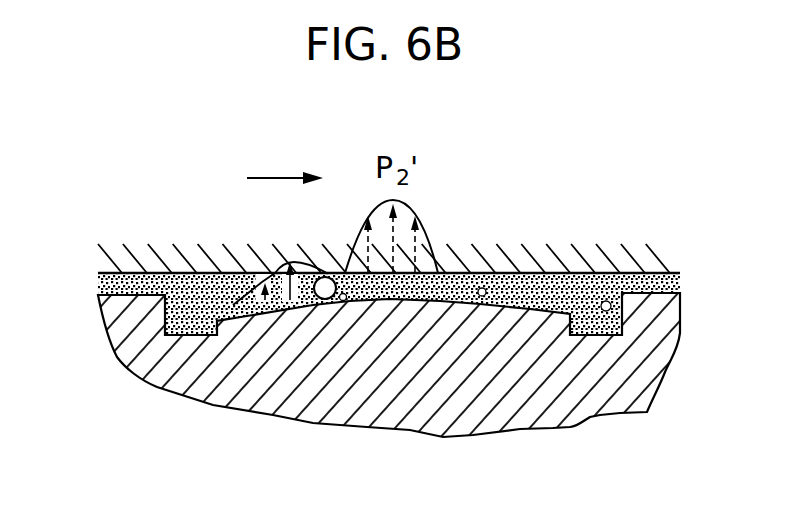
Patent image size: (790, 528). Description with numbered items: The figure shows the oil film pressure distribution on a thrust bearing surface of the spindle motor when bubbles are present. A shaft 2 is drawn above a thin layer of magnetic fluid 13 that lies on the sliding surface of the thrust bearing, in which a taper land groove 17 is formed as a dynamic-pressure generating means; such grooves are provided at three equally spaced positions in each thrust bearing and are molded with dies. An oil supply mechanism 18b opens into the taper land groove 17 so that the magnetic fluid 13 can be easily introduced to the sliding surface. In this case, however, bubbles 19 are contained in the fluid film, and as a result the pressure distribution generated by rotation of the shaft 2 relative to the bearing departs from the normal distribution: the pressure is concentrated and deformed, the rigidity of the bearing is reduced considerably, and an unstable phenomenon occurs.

The shaft 2 is at (523, 252).
The magnetic fluid 13 is at (196, 303).
The taper land groove 17 is at (300, 306).
The oil supply mechanism 18b is at (585, 337).
The bubble 19 is at (325, 299).